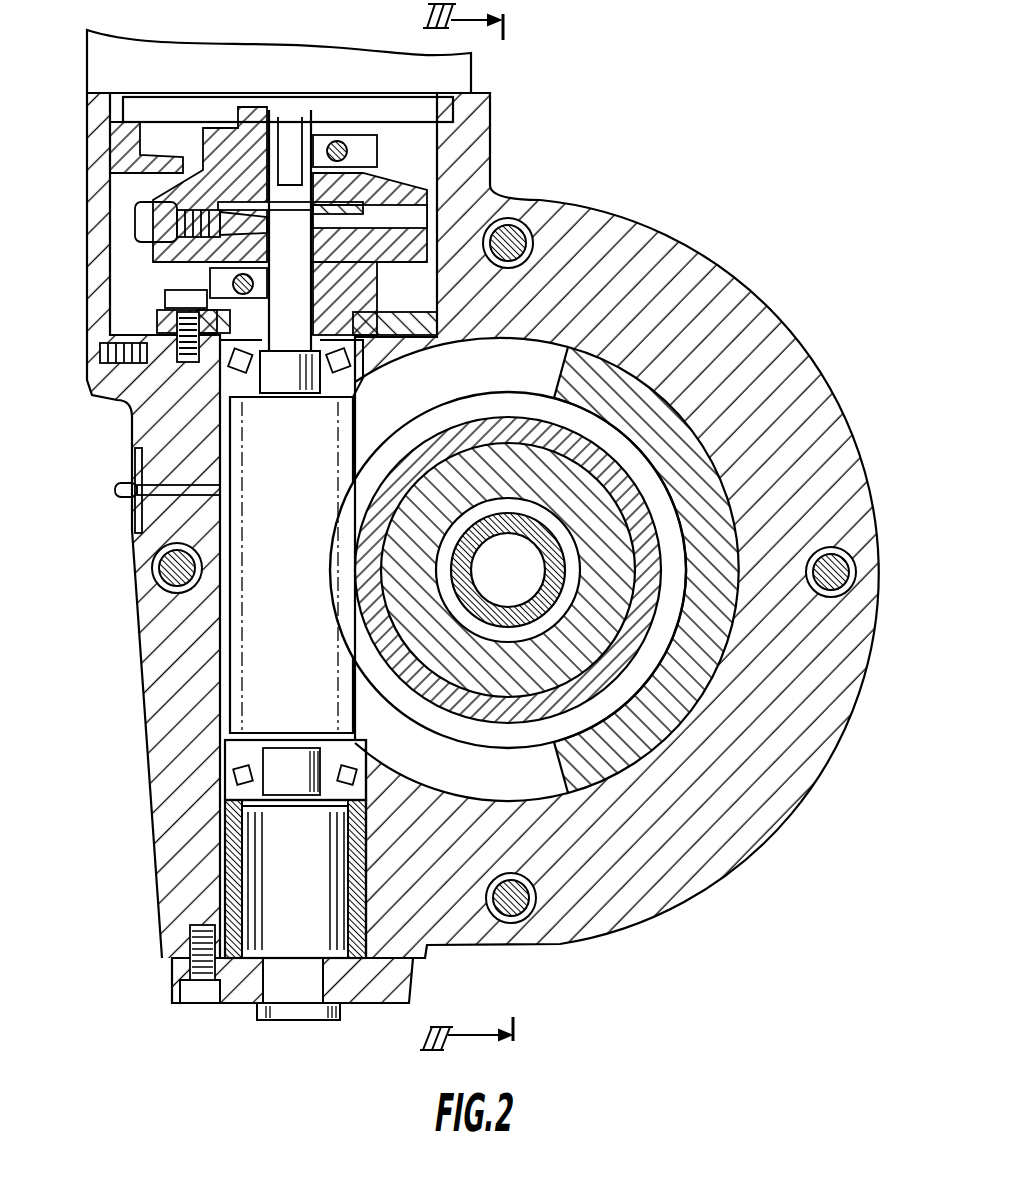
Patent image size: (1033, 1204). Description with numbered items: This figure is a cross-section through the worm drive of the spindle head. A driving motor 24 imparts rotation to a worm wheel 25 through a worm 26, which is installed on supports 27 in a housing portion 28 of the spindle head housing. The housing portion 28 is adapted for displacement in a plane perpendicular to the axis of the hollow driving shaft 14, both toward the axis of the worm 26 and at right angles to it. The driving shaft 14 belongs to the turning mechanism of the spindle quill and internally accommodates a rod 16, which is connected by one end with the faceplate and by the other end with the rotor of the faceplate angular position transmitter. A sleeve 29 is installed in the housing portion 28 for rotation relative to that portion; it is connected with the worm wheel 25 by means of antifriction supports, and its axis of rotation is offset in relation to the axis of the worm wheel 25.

The hollow driving shaft 14 is at (437, 490).
The rod 16 is at (478, 537).
The driving motor 24 is at (104, 49).
The worm wheel 25 is at (488, 430).
The worm 26 is at (258, 441).
The supports 27 is at (236, 780).
The housing portion 28 is at (668, 855).
The sleeve 29 is at (690, 718).